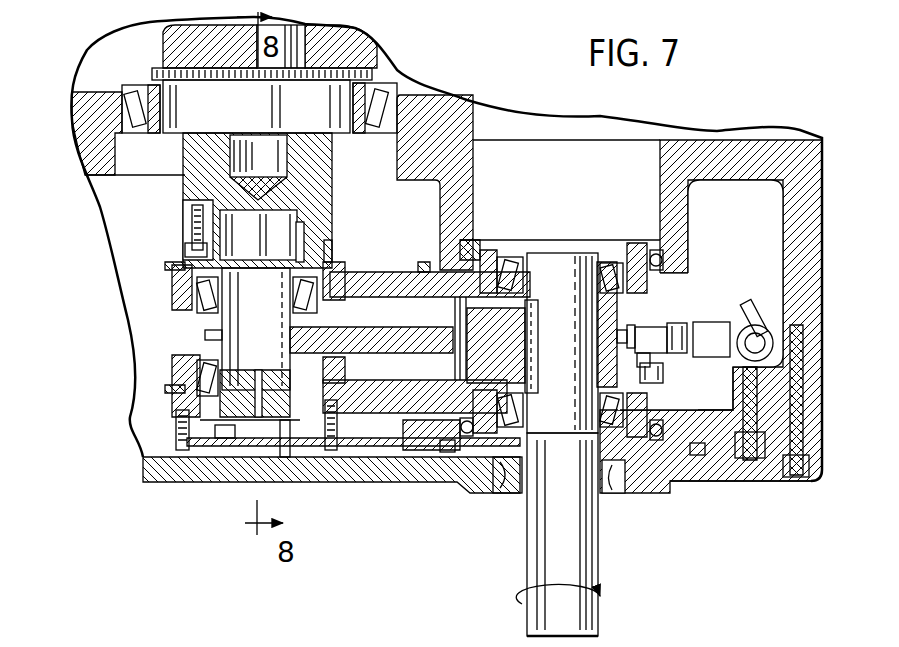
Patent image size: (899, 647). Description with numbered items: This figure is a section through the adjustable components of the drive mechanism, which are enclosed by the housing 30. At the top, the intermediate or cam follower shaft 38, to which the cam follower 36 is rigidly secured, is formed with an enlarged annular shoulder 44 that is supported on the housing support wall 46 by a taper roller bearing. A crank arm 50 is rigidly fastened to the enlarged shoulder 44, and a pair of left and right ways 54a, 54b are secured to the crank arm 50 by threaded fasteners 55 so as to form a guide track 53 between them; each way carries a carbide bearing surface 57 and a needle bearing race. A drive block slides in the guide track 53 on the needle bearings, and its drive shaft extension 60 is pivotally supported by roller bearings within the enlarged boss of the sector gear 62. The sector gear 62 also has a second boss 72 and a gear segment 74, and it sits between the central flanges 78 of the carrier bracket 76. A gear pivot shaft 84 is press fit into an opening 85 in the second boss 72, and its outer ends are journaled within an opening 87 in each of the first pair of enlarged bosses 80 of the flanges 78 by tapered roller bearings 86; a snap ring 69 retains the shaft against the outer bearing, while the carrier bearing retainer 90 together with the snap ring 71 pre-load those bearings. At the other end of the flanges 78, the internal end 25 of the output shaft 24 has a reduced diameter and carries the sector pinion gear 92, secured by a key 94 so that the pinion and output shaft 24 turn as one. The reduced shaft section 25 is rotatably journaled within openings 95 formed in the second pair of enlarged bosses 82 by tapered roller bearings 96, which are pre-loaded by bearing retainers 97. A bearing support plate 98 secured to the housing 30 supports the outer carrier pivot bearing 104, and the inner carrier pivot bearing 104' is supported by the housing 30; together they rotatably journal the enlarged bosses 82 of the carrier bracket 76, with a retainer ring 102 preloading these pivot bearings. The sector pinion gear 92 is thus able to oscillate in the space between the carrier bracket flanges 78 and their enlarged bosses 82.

The output shaft 24 is at (600, 568).
The internal end of output shaft 25 is at (572, 268).
The housing 30 is at (240, 470).
The cam follower 36 is at (355, 52).
The intermediate or cam follower shaft 38 is at (235, 42).
The enlarged annular shoulder 44 is at (378, 57).
The housing support wall 46 is at (95, 115).
The crank arm 50 is at (190, 160).
The guide track 53 is at (332, 253).
The left way 54a is at (185, 227).
The right way 54b is at (333, 237).
The threaded fasteners 55 is at (183, 238).
The carbide bearing surface 57 is at (280, 182).
The drive shaft extension 60 is at (200, 302).
The sector gear 62 is at (377, 333).
The snap ring 69 is at (288, 470).
The snap ring 71 is at (333, 267).
The second boss 72 is at (200, 343).
The gear segment 74 is at (402, 430).
The carrier bracket 76 is at (420, 268).
The central flanges 78 is at (380, 280).
The first pair of enlarged bosses 80 is at (173, 268).
The second pair of enlarged bosses 82 is at (477, 240).
The gear pivot shaft 84 is at (225, 440).
The opening 85 is at (210, 334).
The tapered roller bearings 86 is at (207, 327).
The opening 87 is at (203, 352).
The carrier bearing retainer 90 is at (237, 445).
The sector pinion gear 92 is at (502, 337).
The key 94 is at (538, 357).
The openings 95 is at (492, 390).
The tapered roller bearings 96 is at (523, 280).
The bearing retainers 97 is at (502, 245).
The bearing support plate 98 is at (400, 452).
The retainer ring 102 is at (440, 456).
The outer carrier pivot bearing 104 is at (628, 368).
The inner carrier pivot bearing 104' is at (718, 318).